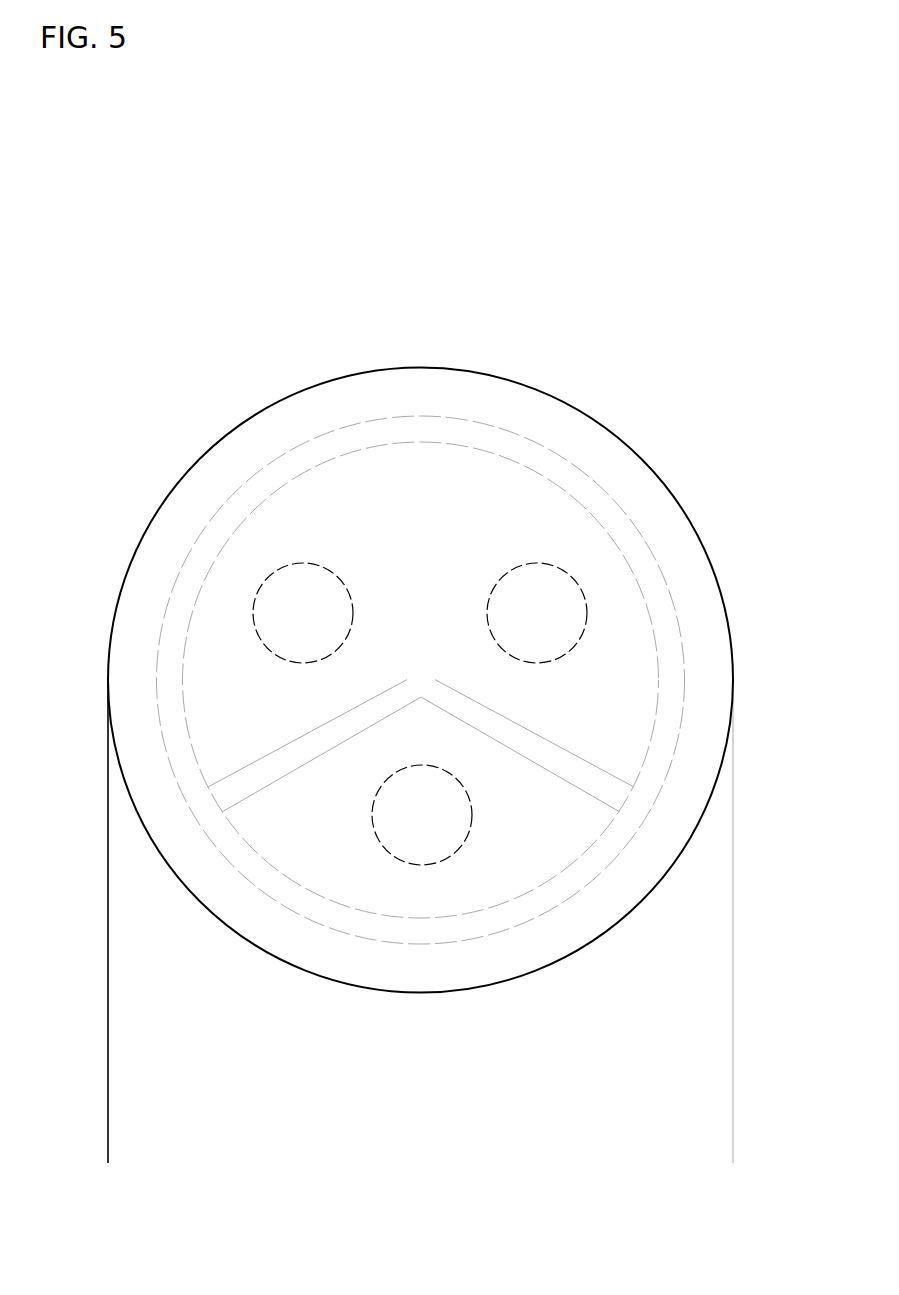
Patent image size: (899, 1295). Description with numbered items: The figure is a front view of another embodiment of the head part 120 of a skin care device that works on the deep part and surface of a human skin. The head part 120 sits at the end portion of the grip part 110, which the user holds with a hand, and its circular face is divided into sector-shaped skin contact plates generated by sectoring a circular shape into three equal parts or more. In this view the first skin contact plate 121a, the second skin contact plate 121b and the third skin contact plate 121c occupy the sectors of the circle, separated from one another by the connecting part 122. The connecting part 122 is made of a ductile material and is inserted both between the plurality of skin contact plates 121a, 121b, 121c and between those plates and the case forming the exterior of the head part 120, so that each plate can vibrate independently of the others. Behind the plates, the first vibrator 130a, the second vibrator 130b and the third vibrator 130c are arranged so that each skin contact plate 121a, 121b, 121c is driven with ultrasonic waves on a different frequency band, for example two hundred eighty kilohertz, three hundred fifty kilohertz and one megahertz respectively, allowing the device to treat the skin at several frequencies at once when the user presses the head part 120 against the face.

The grip part 110 is at (137, 937).
The head part 120 is at (547, 420).
The connecting part 122 is at (420, 425).
The first skin contact plate 121a is at (347, 517).
The second skin contact plate 121b is at (306, 828).
The third skin contact plate 121c is at (603, 693).
The first vibrator 130a is at (297, 613).
The second vibrator 130b is at (424, 822).
The third vibrator 130c is at (535, 610).